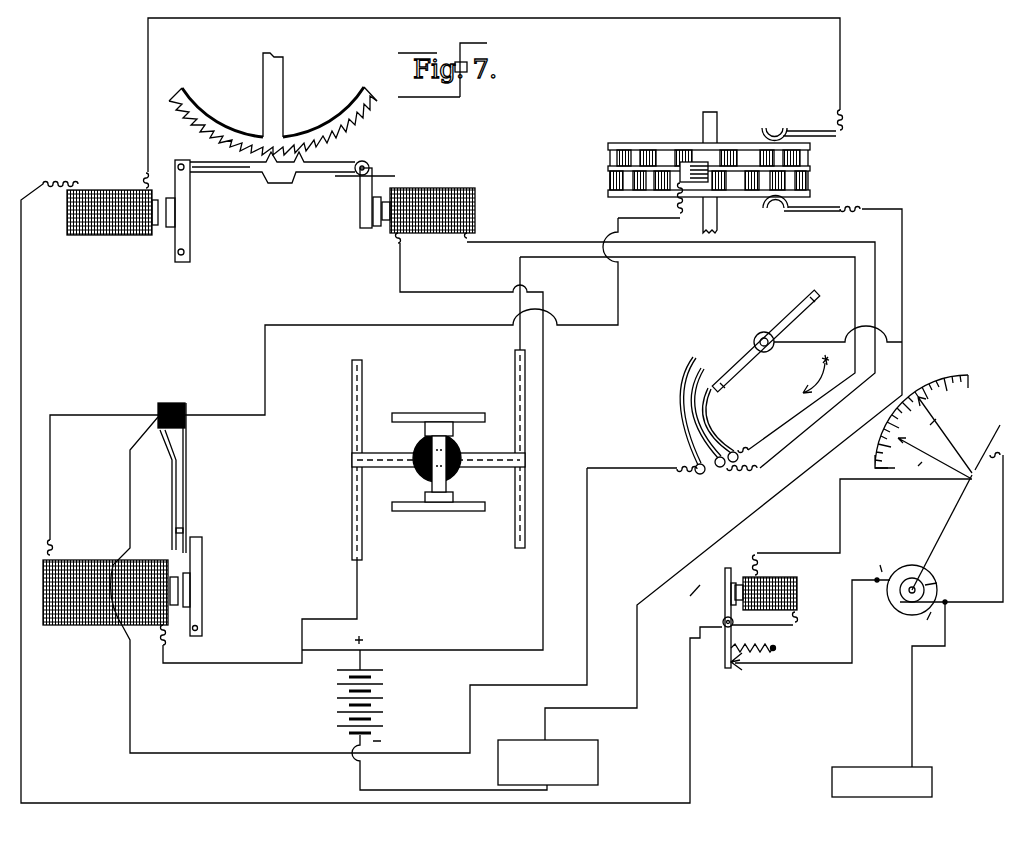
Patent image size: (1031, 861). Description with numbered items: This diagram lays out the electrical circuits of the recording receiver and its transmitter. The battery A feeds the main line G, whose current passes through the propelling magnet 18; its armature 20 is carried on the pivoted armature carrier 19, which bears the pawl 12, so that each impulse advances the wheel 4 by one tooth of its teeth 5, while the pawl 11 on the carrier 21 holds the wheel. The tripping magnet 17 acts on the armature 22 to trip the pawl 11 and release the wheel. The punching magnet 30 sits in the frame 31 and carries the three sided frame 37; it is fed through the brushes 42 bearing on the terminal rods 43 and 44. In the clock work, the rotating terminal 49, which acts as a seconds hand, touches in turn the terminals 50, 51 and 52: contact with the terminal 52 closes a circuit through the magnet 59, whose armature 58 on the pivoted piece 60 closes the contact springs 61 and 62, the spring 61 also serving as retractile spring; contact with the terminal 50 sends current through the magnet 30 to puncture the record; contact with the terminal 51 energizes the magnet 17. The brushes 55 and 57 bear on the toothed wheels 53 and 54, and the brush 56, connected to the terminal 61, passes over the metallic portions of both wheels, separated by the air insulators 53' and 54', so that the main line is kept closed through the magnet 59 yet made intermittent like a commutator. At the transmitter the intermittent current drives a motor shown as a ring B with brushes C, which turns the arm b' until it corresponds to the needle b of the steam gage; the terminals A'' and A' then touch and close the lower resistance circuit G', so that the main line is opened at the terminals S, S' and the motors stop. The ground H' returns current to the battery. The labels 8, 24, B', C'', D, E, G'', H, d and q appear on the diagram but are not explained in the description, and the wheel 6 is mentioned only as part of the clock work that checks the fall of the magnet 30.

The wheel 4 is at (213, 129).
The teeth 5 is at (181, 120).
The shaft 8 is at (715, 128).
The pawl 11 is at (347, 167).
The pawl 12 is at (205, 173).
The tripping magnet 17 is at (430, 236).
The propelling magnet 18 is at (108, 237).
The pivoted armature carrier 19 is at (190, 249).
The armature 20 is at (175, 214).
The carrier 21 is at (360, 212).
The armature 22 is at (373, 232).
The pivot 24 is at (182, 163).
The magnet 30 is at (461, 449).
The frame 31 is at (421, 413).
The three sided frame 37 is at (445, 424).
The brushes 42 is at (381, 468).
The electric terminal rod 43 is at (362, 398).
The electric terminal rod 44 is at (518, 386).
The terminal 49 is at (790, 306).
The terminal 50 is at (715, 433).
The terminal 51 is at (687, 410).
The terminal 52 is at (684, 446).
The wheel 53 is at (726, 157).
The insulator 53' is at (708, 143).
The wheel 54 is at (726, 186).
The insulator 54' is at (708, 201).
The spring terminal 55 is at (791, 132).
The brush 56 is at (682, 166).
The third spring terminal 57 is at (801, 211).
The armature 58 is at (190, 586).
The magnet 59 is at (85, 560).
The pivoted piece 60 is at (196, 556).
The contact spring 61 is at (186, 472).
The contact spring 62 is at (172, 474).
The battery A is at (442, 713).
The terminal A' is at (944, 413).
The electric terminal A'' is at (934, 458).
The ring B is at (907, 602).
The contact B' is at (944, 578).
The brushes C is at (908, 593).
The wire C'' is at (716, 569).
The pointer D is at (987, 437).
The connecting rod E is at (942, 532).
The main line G is at (506, 435).
The circuit G' is at (921, 516).
The wire G'' is at (781, 634).
The ground H is at (882, 769).
The ground H' is at (547, 747).
The terminal S is at (753, 668).
The terminal S' is at (722, 673).
The needle b is at (945, 435).
The arm b' is at (921, 472).
The dial d is at (931, 418).
The armature q is at (724, 609).
The wheel 6 is at (779, 577).